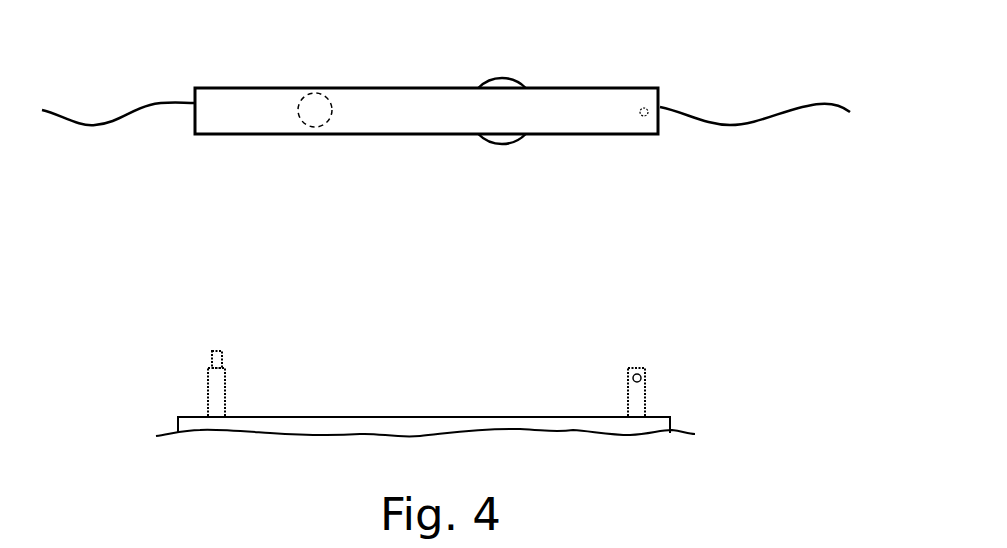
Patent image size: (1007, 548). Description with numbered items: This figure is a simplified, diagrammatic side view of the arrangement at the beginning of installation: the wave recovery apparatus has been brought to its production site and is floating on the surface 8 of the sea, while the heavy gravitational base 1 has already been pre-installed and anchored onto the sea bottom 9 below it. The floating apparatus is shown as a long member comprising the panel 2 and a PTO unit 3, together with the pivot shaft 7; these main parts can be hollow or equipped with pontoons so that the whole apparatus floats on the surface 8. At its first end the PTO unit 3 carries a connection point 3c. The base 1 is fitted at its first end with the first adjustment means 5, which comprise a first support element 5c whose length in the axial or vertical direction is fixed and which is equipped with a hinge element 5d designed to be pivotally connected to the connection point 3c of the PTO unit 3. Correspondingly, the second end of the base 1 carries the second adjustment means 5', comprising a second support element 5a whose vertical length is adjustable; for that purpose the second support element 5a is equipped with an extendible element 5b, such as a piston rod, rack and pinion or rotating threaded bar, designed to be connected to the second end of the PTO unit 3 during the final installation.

The base 1 is at (373, 420).
The panel 2 is at (502, 138).
The PTO unit 3 is at (593, 90).
The connection point 3c is at (644, 118).
The first adjustment means 5 is at (714, 329).
The second adjustment means 5' is at (121, 318).
The second support element 5a is at (213, 385).
The extendible element 5b is at (223, 357).
The first support element 5c is at (630, 396).
The hinge element 5d is at (638, 371).
The pivot shaft 7 is at (310, 123).
The surface of the sea 8 is at (735, 120).
The sea bottom 9 is at (688, 432).